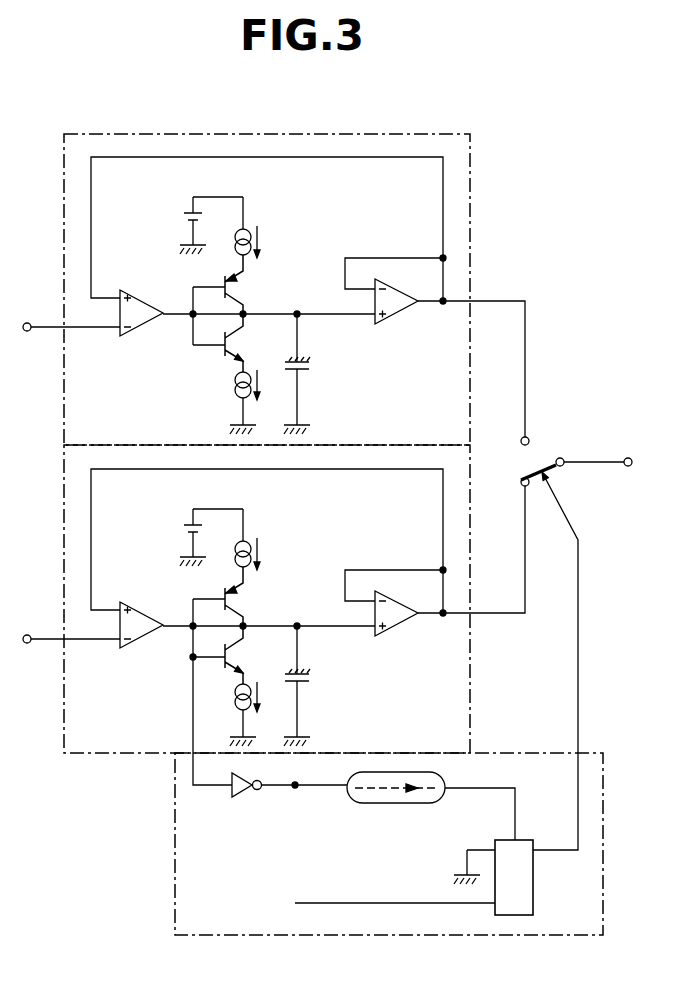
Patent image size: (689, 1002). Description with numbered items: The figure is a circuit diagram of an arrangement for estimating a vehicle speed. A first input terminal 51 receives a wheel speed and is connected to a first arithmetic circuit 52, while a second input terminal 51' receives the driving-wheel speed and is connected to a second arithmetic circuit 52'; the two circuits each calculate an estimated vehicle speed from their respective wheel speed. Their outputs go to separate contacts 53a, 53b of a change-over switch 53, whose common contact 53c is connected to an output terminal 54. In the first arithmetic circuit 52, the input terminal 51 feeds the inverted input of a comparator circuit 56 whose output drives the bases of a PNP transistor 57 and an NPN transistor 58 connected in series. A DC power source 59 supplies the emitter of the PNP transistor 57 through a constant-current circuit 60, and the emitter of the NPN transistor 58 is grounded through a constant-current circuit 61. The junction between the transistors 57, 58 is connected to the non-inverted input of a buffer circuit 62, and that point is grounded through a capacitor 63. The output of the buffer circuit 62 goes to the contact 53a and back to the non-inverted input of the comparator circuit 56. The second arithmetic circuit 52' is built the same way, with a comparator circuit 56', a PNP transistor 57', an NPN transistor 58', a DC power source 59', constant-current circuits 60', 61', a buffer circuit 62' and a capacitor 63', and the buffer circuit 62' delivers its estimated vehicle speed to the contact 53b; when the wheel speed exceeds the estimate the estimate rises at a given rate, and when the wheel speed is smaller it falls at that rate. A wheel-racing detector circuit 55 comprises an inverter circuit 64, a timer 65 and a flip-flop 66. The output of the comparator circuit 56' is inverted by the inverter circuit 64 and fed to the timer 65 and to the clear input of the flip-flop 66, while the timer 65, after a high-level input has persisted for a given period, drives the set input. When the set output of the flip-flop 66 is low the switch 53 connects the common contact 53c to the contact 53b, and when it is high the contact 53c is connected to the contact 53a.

The first input terminal 51 is at (64, 326).
The second input terminal 51' is at (64, 638).
The first arithmetic circuit 52 is at (267, 268).
The second arithmetic circuit 52' is at (267, 625).
The change-over switch 53 is at (530, 474).
The separate contact 53a is at (521, 438).
The separate contact 53b is at (521, 486).
The common contact 53c is at (562, 467).
The output terminal 54 is at (628, 458).
The wheel-racing detector circuit 55 is at (258, 936).
The comparator circuit 56 is at (267, 246).
The comparator circuit 56' is at (267, 558).
The PNP transistor 57 is at (212, 300).
The PNP transistor 57' is at (212, 613).
The NPN transistor 58 is at (208, 343).
The NPN transistor 58' is at (208, 665).
The DC power source 59 is at (178, 222).
The DC power source 59' is at (178, 534).
The constant-current circuit 60 is at (235, 224).
The constant-current circuit 60' is at (238, 536).
The constant-current circuit 61 is at (253, 379).
The constant-current circuit 61' is at (256, 693).
The buffer circuit 62 is at (435, 346).
The buffer circuit 62' is at (435, 576).
The capacitor 63 is at (312, 374).
The capacitor 63' is at (315, 686).
The inverter circuit 64 is at (238, 797).
The timer 65 is at (394, 804).
The flip-flop 66 is at (533, 904).